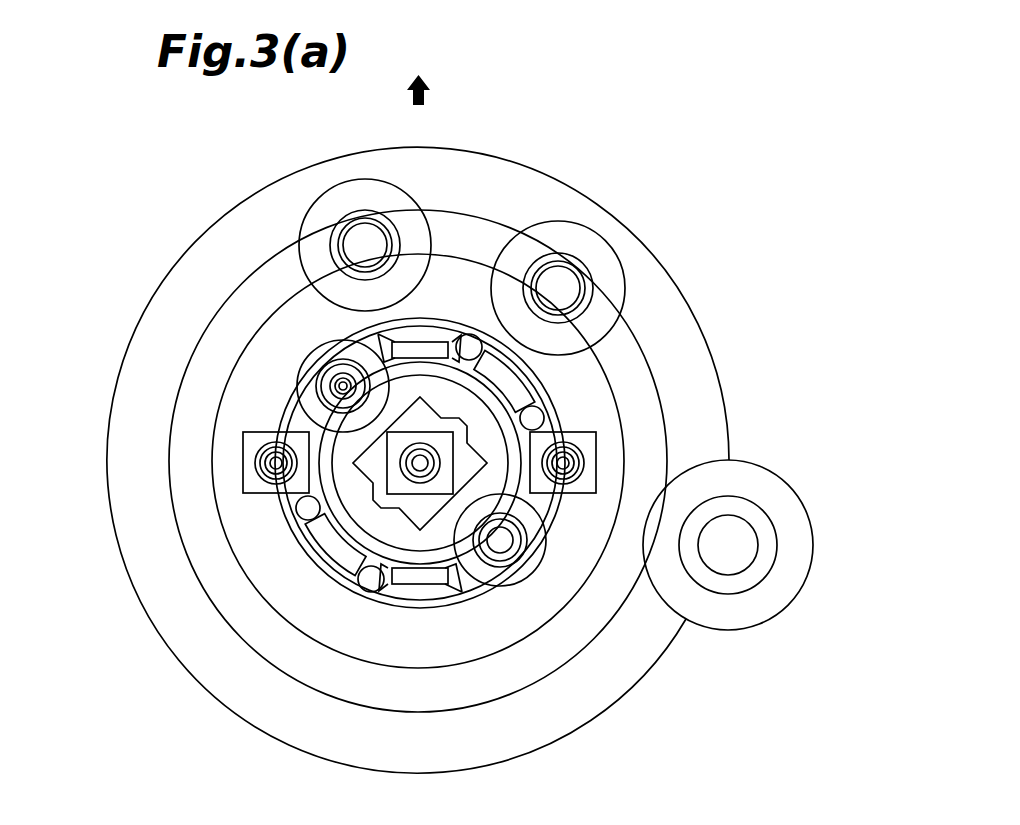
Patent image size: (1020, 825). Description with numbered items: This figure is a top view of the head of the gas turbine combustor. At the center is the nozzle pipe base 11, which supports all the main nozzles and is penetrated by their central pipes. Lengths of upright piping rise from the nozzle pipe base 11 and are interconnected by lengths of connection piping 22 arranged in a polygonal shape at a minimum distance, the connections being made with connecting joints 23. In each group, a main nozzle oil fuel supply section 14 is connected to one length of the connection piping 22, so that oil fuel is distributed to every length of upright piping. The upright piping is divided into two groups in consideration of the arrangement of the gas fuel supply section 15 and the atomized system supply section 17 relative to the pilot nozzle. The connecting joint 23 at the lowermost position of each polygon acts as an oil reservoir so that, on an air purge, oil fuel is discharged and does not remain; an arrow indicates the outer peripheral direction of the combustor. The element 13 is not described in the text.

The nozzle pipe base 11 is at (460, 277).
The roller 13 is at (318, 200).
The main nozzle oil fuel supply section 14 is at (243, 463).
The gas fuel supply section 15 is at (533, 575).
The atomized system supply section 17 is at (300, 360).
The connection piping 22 is at (437, 347).
The connecting joint 23 is at (468, 340).